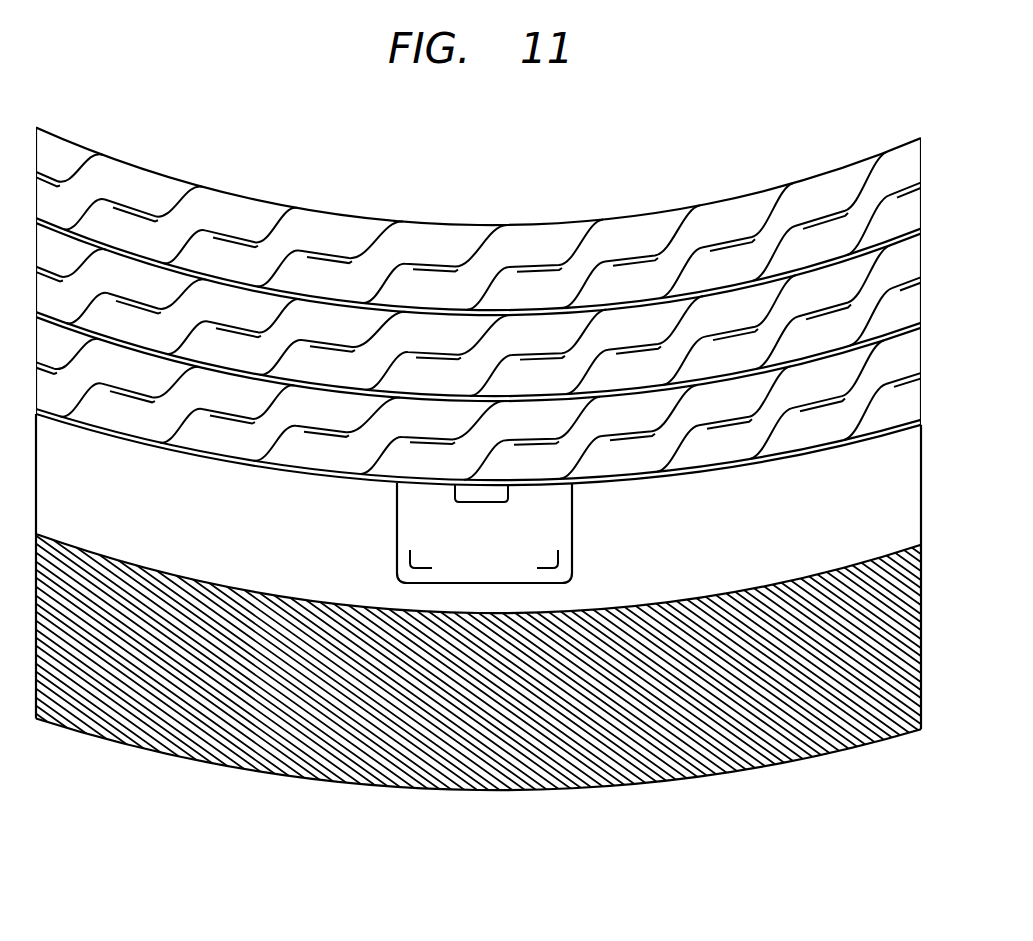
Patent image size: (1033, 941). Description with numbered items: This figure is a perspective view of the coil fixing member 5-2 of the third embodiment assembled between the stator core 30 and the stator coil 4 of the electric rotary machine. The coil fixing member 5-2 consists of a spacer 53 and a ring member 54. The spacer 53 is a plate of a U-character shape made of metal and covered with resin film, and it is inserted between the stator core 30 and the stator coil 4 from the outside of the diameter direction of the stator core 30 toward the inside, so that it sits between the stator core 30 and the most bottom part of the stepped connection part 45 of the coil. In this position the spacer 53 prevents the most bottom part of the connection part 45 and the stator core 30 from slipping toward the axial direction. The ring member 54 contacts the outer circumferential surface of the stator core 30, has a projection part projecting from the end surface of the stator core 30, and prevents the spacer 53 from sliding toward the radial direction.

The stator coil 4 is at (472, 284).
The connection part 45 is at (826, 187).
The stator core 30 is at (833, 550).
The spacer 53 is at (470, 568).
The ring member 54 is at (490, 762).
The coil fixing member 5-2 is at (484, 699).